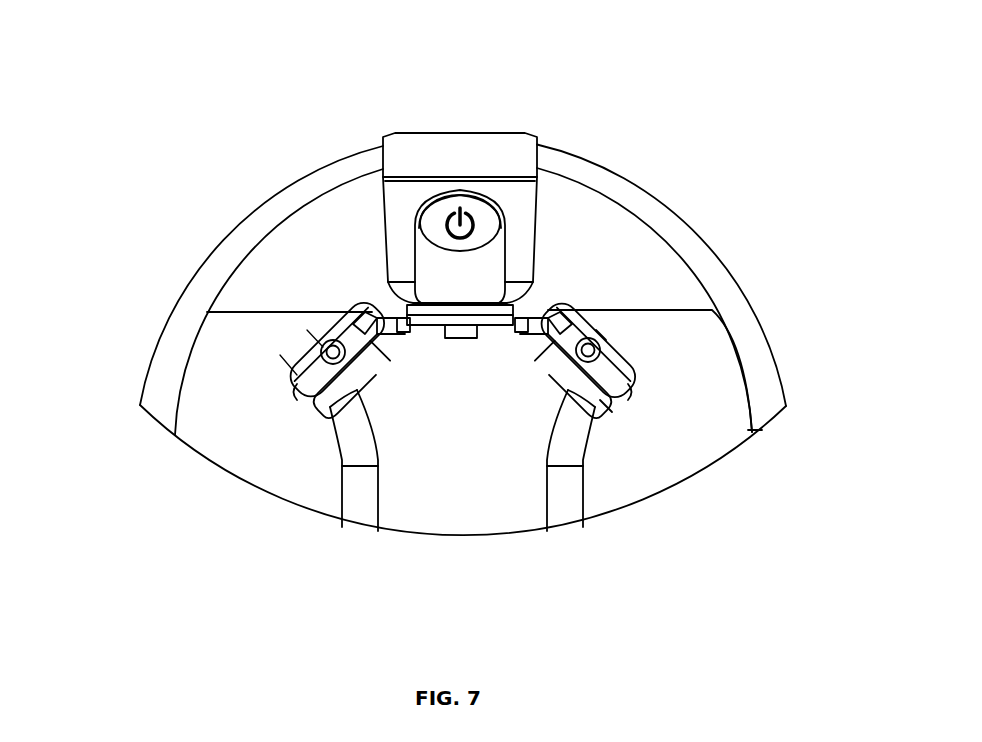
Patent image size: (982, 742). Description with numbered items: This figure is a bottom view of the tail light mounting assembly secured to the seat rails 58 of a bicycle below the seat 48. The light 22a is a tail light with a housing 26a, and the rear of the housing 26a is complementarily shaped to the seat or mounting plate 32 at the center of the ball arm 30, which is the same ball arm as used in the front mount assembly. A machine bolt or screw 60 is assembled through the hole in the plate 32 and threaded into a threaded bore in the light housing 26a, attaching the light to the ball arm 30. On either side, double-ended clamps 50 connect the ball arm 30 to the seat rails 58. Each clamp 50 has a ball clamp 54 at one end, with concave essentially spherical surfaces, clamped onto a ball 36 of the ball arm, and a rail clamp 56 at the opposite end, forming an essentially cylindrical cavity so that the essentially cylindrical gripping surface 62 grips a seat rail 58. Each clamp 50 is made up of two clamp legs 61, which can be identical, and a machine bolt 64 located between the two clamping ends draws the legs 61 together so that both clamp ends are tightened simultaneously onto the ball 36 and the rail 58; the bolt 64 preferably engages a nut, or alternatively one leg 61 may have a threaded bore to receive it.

The light 22a is at (548, 118).
The housing 26a is at (520, 200).
The ball arm 30 is at (505, 326).
The mounting plate 32 is at (378, 453).
The ball 36 is at (537, 340).
The seat 48 is at (322, 163).
The clamps 50 is at (623, 387).
The ball clamp 54 is at (552, 326).
The rail clamp 56 is at (295, 412).
The seat rails 58 is at (352, 437).
The machine bolt or screw 60 is at (459, 338).
The clamp legs 61 is at (312, 380).
The cylindrical gripping surface 62 is at (608, 408).
The machine bolt 64 is at (603, 335).